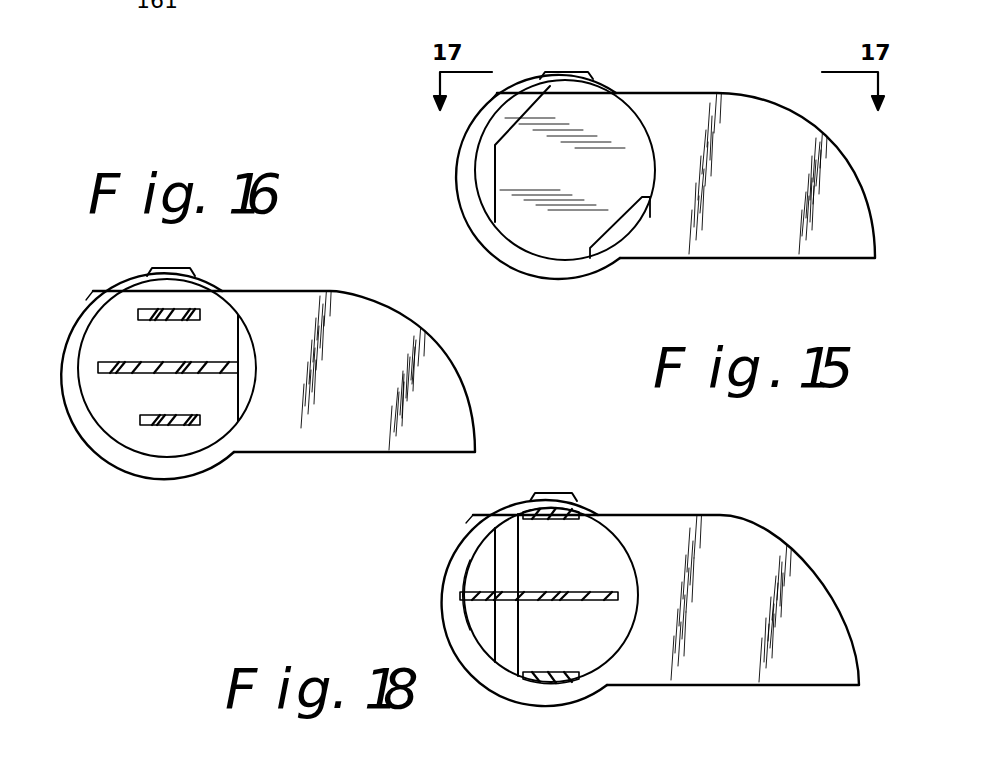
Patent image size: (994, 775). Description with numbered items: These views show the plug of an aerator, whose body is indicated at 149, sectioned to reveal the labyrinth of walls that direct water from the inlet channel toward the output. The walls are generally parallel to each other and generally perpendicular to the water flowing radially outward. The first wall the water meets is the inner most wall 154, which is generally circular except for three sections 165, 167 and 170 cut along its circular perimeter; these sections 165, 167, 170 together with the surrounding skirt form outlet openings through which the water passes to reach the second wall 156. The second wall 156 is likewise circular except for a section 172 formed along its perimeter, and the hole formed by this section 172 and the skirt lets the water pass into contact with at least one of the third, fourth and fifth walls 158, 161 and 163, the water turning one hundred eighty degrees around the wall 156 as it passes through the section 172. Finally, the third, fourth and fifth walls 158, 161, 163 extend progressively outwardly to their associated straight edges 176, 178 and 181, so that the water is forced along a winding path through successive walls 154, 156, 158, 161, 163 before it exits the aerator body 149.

In FIG. 15, the housing body 149 is at (805, 220).
In FIG. 16, the housing body 149 is at (442, 410).
In FIG. 18, the housing body 149 is at (793, 607).
In FIG. 15, the inner most wall 154 is at (562, 218).
In FIG. 16, the inner most wall 154 is at (167, 368).
In FIG. 15, the second wall 156 is at (513, 113).
In FIG. 16, the second wall 156 is at (207, 323).
In FIG. 18, the third wall 158 is at (570, 640).
In FIG. 18, the fourth wall 161 is at (507, 548).
In FIG. 18, the fifth wall 163 is at (487, 627).
In FIG. 15, the section 165 is at (540, 82).
In FIG. 16, the section 165 is at (171, 272).
In FIG. 18, the section 165 is at (553, 497).
In FIG. 15, the section 167 is at (628, 220).
In FIG. 15, the section 170 is at (494, 173).
In FIG. 16, the section 170 is at (147, 376).
In FIG. 18, the section 170 is at (524, 603).
In FIG. 16, the section 172 is at (238, 337).
In FIG. 18, the straight edge 176 is at (513, 533).
In FIG. 18, the straight edge 178 is at (493, 564).
In FIG. 18, the straight edge 181 is at (483, 612).